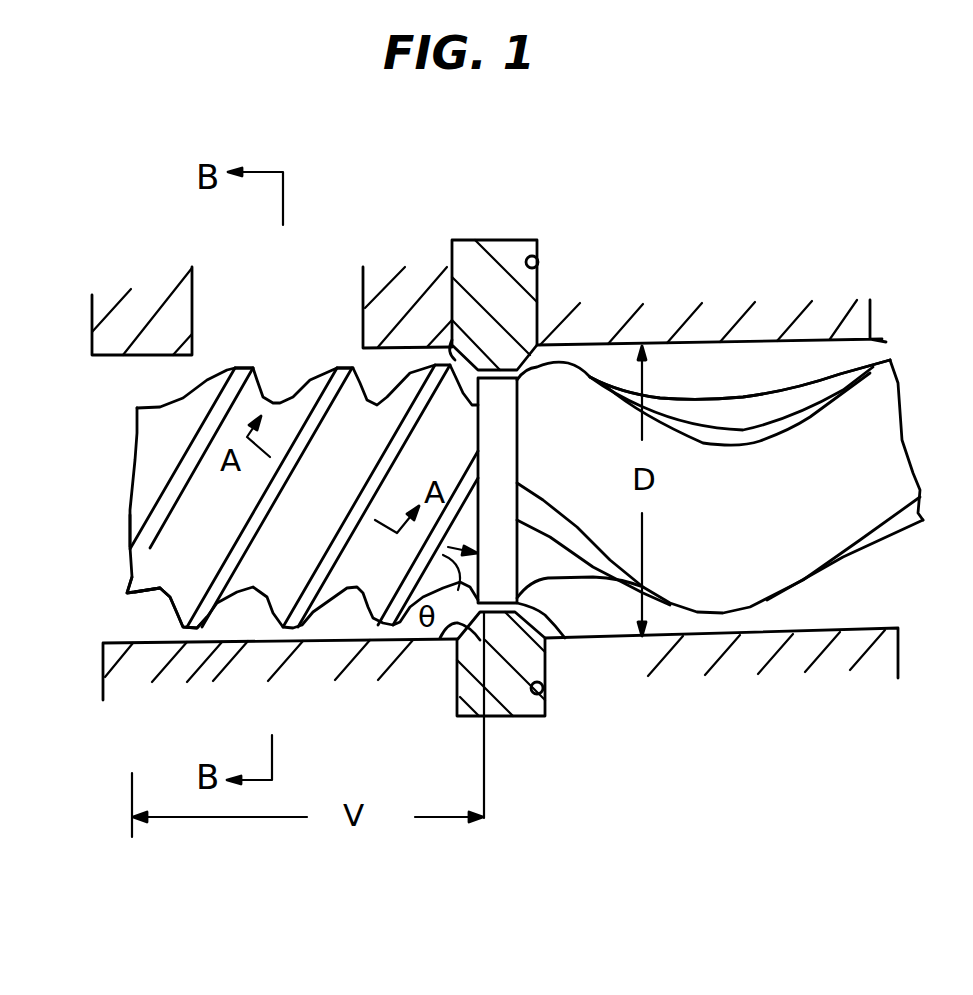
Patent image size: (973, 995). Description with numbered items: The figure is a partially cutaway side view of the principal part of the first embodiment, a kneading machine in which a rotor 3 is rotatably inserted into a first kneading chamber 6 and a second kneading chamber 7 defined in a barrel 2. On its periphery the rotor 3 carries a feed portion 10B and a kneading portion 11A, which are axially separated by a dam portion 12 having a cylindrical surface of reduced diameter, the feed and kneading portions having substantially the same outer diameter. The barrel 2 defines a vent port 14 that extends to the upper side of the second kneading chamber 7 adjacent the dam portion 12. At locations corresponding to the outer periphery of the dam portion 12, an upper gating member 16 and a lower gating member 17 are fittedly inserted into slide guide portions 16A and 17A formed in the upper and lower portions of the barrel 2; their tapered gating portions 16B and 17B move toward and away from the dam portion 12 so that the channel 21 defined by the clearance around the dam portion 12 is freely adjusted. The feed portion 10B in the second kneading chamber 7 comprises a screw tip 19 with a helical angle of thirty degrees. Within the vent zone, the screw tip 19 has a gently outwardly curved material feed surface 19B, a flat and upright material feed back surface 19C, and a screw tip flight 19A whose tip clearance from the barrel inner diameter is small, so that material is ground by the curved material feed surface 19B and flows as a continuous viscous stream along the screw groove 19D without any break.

The barrel 2 is at (146, 327).
The rotor 3 is at (817, 386).
The first kneading chamber 6 is at (773, 379).
The second kneading chamber 7 is at (108, 668).
The feed portion 10B is at (158, 623).
The kneading portion 11A is at (673, 467).
The dam portion 12 is at (520, 417).
The vent port 14 is at (284, 282).
The upper gating member 16 is at (485, 265).
The slide guide portion 16A is at (540, 250).
The gating portion 16B is at (450, 350).
The lower gating member 17 is at (508, 687).
The slide guide portion 17A is at (543, 695).
The gating portion 17B is at (460, 625).
The screw tip 19 is at (150, 507).
The screw tip flight 19A is at (180, 467).
The material feed surface 19B is at (217, 370).
The material feed back surface 19C is at (160, 543).
The screw groove 19D is at (160, 565).
The channel 21 is at (547, 641).